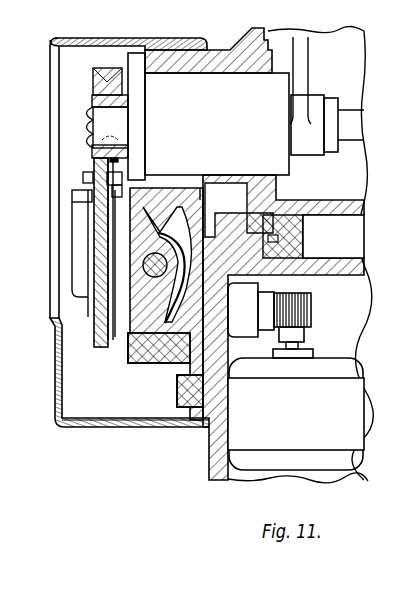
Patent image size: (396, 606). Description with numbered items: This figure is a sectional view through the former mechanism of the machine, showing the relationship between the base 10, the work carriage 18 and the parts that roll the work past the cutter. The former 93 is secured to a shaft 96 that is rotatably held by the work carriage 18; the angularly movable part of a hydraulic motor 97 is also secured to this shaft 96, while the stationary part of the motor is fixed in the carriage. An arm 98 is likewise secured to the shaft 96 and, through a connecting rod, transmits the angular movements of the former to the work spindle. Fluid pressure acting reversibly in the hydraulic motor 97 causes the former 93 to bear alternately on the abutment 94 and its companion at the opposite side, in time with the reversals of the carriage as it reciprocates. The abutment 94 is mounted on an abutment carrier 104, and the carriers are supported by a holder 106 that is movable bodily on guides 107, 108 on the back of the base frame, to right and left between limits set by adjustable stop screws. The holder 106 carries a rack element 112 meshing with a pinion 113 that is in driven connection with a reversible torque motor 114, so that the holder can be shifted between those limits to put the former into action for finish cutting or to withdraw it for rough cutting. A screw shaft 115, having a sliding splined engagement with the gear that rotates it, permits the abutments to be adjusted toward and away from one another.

The base 10 is at (3, 258).
The work carriage 18 is at (246, 37).
The former 93 is at (100, 346).
The abutment 94 is at (88, 316).
The shaft 96 is at (93, 122).
The hydraulic motor 97 is at (278, 162).
The arm 98 is at (308, 67).
The abutment carrier 104 is at (142, 380).
The holder 106 is at (133, 357).
The guide 107 is at (180, 383).
The guide 108 is at (206, 190).
The rack element 112 is at (268, 303).
The pinion 113 is at (312, 309).
The reversible torque motor 114 is at (338, 368).
The screw shaft 115 is at (125, 326).